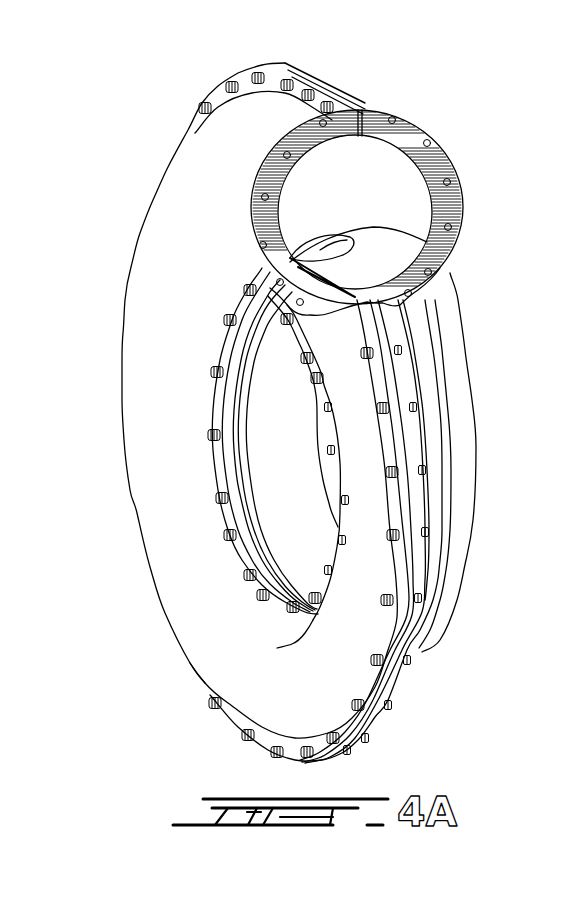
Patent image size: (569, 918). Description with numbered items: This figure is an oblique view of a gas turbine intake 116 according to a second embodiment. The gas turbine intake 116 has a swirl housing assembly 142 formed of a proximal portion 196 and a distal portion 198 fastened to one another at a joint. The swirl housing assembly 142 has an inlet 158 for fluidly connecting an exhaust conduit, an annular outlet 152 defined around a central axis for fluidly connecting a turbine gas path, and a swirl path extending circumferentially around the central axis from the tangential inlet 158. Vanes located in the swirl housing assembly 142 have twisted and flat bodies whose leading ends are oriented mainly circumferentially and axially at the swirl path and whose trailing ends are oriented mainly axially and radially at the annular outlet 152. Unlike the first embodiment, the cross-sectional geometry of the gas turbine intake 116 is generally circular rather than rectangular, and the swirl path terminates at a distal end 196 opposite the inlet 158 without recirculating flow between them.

The gas turbine intake 116 is at (443, 155).
The swirl housing assembly 142 is at (132, 412).
The annular outlet 152 is at (466, 366).
The inlet 158 is at (336, 124).
The proximal portion 196 is at (430, 241).
The distal portion 198 is at (172, 543).